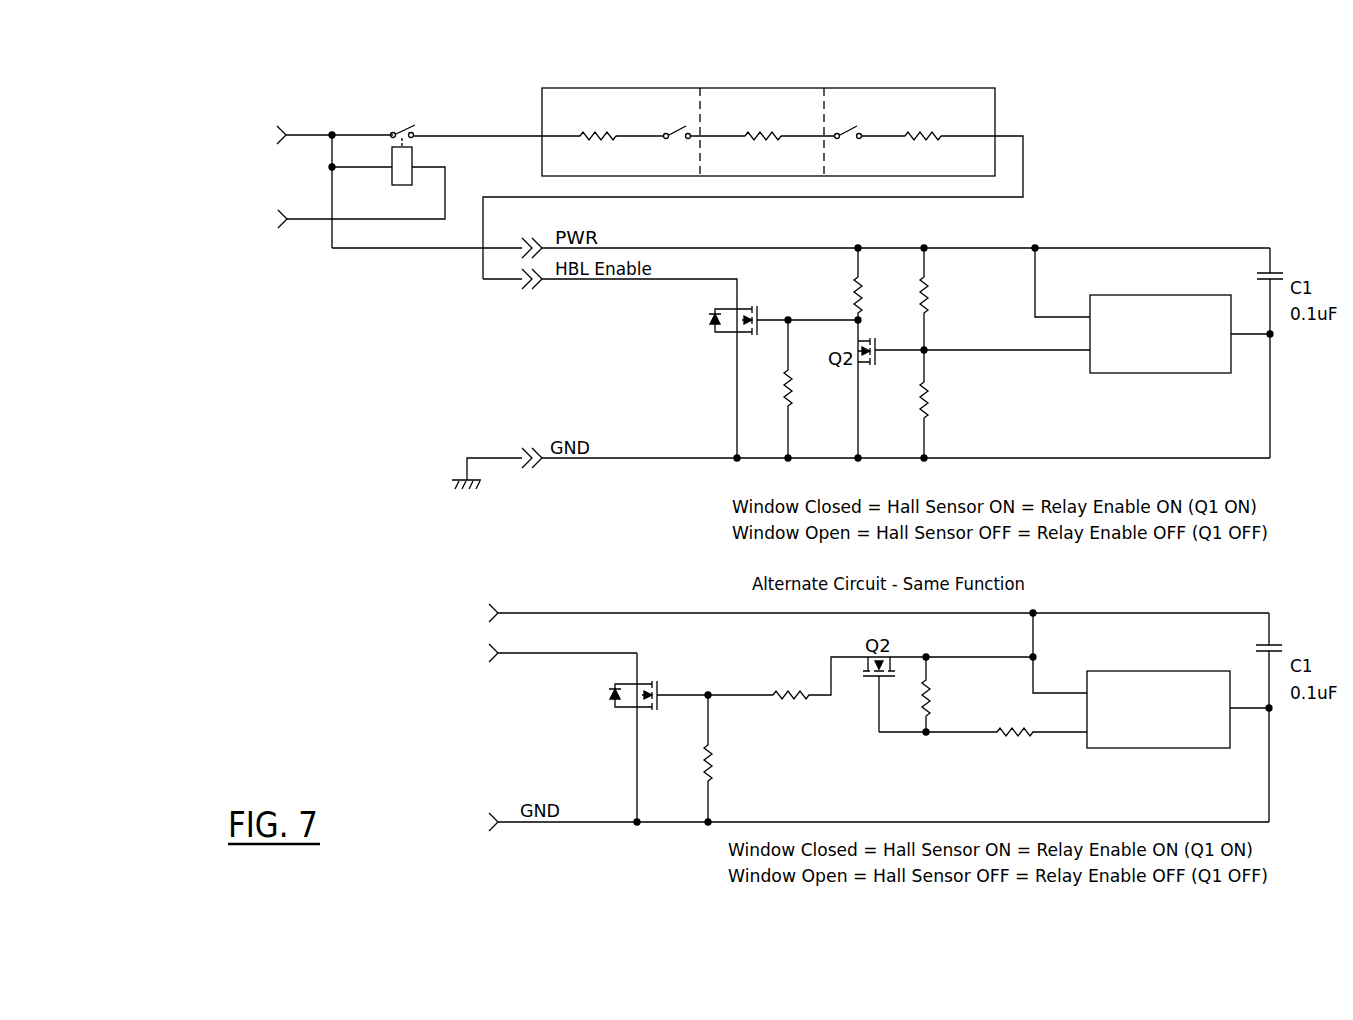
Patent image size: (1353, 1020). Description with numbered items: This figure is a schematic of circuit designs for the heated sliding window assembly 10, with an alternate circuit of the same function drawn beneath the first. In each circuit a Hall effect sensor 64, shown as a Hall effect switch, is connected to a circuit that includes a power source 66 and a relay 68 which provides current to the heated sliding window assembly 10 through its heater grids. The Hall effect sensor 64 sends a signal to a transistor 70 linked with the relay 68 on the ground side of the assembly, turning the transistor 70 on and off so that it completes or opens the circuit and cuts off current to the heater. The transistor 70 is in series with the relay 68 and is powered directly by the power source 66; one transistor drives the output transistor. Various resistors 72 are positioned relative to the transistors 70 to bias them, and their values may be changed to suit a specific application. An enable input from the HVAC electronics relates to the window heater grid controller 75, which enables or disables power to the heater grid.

The heated sliding window assembly 10 is at (1012, 87).
The Hall effect sensor 64 is at (1150, 295).
The power source 66 is at (280, 124).
The relay 68 is at (413, 128).
The transistor 70 is at (716, 333).
The resistors 72 is at (852, 276).
The window heater grid controller 75 is at (243, 244).